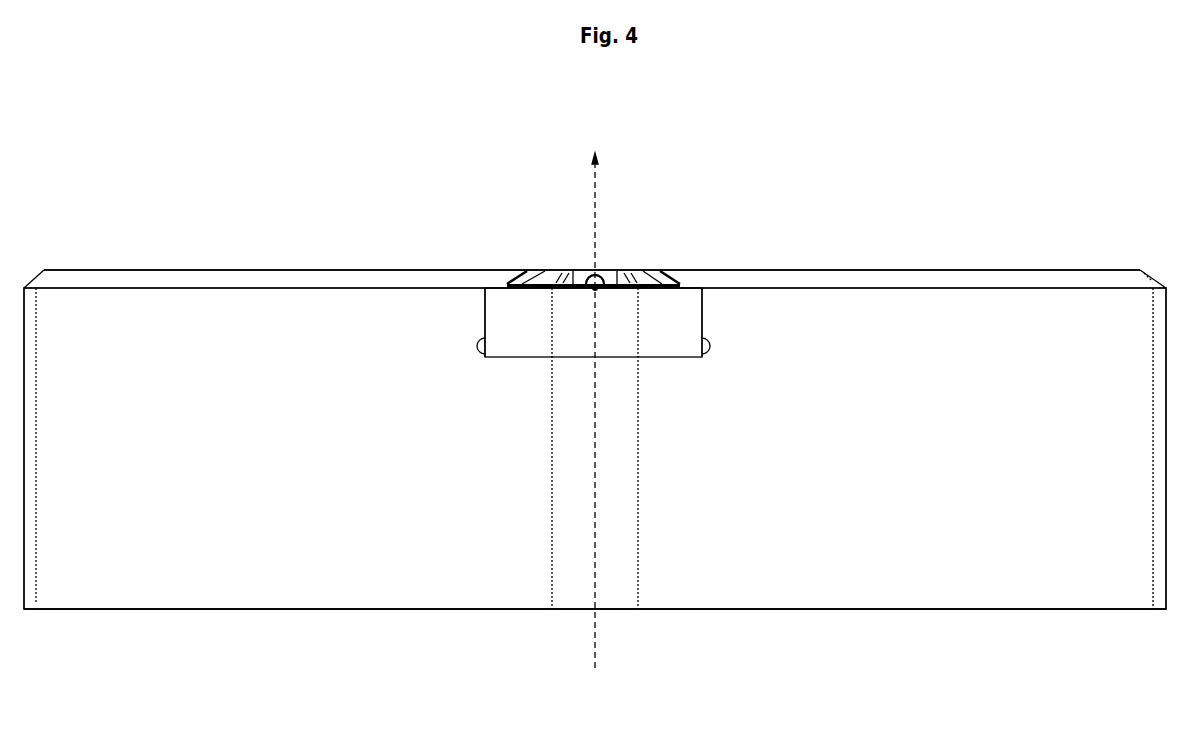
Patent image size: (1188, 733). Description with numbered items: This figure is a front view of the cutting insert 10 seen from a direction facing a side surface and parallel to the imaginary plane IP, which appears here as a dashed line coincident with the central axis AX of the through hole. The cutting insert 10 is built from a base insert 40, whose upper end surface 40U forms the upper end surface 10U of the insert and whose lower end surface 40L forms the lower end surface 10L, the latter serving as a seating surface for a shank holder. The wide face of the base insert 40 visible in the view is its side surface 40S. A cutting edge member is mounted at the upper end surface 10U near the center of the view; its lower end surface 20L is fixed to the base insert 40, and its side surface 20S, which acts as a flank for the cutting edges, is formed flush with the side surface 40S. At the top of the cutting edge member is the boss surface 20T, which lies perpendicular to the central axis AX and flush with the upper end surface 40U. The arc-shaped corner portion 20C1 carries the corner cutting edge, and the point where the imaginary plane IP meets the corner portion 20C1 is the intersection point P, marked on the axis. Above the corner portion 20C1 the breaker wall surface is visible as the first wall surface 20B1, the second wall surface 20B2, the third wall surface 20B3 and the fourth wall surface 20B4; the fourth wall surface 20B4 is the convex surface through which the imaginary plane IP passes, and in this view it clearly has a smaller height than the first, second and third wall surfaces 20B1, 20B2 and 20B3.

The cutting insert 10 is at (645, 653).
The base insert 40 is at (595, 417).
The side surface of base insert 40S is at (1052, 249).
The upper end surface of base insert 40U is at (592, 229).
The upper end surface 10U is at (858, 267).
The lower end surface of base insert 40L is at (595, 643).
The lower end surface 10L is at (860, 614).
The side surface 20S is at (572, 332).
The lower end surface 20L is at (517, 358).
The boss surface 20T is at (540, 268).
The first wall surface 20B1 is at (587, 272).
The second wall surface 20B2 is at (563, 270).
The third wall surface 20B3 is at (622, 277).
The fourth wall surface 20B4 is at (598, 274).
The intersection point P is at (697, 482).
The corner portion 20C1 is at (597, 290).
The central axis AX is at (540, 410).
The imaginary plane IP is at (593, 198).